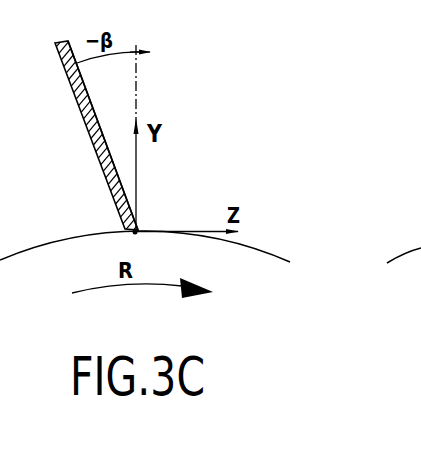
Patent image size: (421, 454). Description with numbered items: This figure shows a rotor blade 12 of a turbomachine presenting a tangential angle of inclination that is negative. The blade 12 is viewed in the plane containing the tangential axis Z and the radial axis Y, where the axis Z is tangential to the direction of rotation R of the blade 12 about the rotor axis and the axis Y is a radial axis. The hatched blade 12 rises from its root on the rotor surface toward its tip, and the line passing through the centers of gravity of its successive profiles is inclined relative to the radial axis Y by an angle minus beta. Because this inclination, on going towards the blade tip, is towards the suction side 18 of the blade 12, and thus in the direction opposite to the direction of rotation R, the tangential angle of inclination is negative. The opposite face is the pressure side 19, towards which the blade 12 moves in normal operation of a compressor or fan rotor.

The blade 12 is at (180, 80).
The suction side 18 is at (96, 157).
The pressure side 19 is at (98, 118).